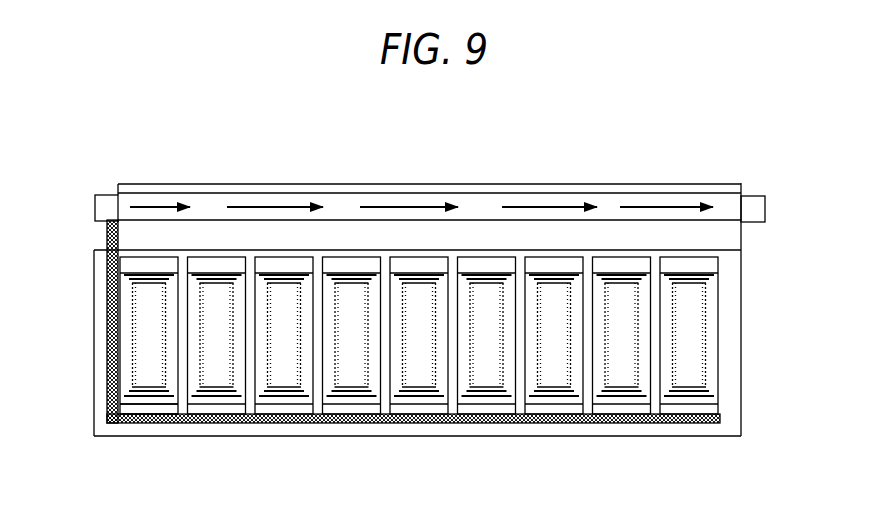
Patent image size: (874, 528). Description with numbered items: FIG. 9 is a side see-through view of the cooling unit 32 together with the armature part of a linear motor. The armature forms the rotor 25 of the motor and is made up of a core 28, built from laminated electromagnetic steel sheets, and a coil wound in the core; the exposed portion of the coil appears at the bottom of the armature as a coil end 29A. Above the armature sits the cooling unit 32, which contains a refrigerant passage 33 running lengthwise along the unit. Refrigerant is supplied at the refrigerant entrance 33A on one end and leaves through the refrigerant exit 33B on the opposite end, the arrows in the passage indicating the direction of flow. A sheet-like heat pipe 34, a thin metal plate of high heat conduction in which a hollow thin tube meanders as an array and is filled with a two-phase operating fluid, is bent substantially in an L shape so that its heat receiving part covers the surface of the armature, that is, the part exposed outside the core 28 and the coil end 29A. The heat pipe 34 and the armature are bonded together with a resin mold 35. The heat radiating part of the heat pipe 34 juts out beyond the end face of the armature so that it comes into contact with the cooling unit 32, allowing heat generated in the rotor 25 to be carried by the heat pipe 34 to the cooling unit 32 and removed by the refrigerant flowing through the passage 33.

The rotor 25 is at (602, 437).
The core 28 is at (490, 375).
The coil end 29A is at (147, 410).
The cooling unit 32 is at (495, 190).
The refrigerant passage 33 is at (213, 193).
The refrigerant entrance 33A is at (96, 208).
The refrigerant exit 33B is at (757, 210).
The sheet-like heat pipe 34 is at (292, 423).
The resin mold 35 is at (415, 431).